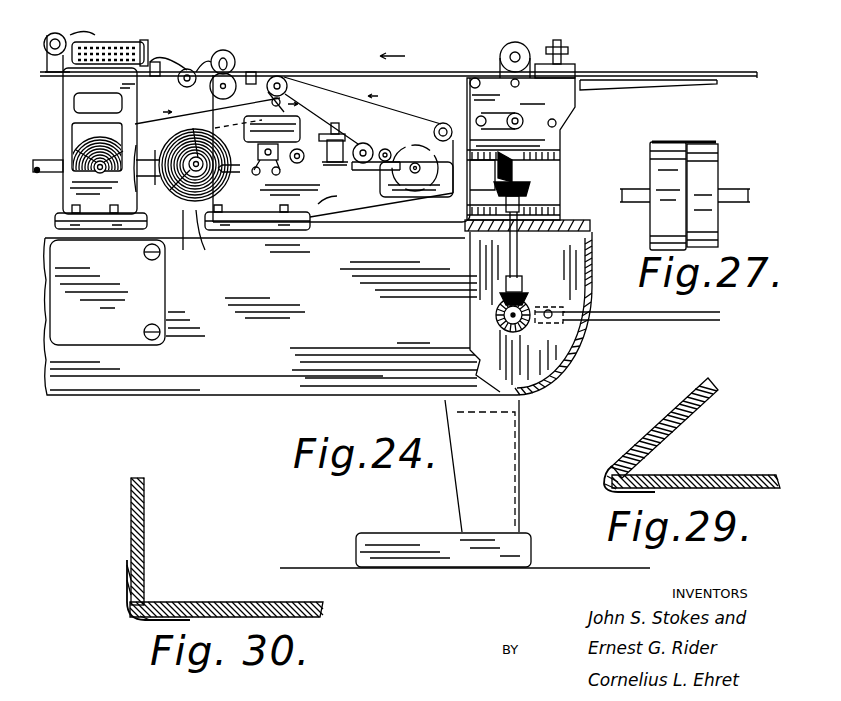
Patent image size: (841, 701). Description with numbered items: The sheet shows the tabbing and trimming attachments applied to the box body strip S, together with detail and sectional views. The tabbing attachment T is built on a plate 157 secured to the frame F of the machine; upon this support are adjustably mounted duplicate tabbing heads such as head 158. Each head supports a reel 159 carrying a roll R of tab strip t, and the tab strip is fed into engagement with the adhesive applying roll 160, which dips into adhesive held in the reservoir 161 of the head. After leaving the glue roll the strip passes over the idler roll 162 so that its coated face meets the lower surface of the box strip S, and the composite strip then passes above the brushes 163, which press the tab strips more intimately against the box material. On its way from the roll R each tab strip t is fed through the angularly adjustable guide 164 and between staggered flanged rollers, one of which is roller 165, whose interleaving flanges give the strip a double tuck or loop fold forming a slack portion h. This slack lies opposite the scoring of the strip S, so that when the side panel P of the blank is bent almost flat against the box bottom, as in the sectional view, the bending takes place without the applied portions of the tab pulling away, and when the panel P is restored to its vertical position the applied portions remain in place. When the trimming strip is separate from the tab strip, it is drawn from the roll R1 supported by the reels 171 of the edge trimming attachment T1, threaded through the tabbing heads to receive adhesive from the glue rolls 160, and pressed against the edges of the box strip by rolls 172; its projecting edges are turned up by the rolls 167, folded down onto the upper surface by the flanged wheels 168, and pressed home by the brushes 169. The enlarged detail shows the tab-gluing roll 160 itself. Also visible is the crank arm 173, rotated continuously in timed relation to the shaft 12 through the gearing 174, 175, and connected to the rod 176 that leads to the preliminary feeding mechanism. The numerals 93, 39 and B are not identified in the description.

In FIG. 24, the box strip S is at (420, 74).
In FIG. 24, the edge trimming attachment T1 is at (70, 102).
In FIG. 24, the roll of trimming strip R1 is at (95, 146).
In FIG. 24, the brushes 169 is at (115, 42).
In FIG. 24, the flanged wheels 168 is at (155, 68).
In FIG. 24, the rolls 167 is at (203, 72).
In FIG. 24, the rolls 172 is at (232, 70).
In FIG. 24, the brushes 163 is at (270, 76).
In FIG. 24, the idler roll 162 is at (287, 91).
In FIG. 24, the angularly adjustable guide 164 is at (245, 130).
In FIG. 24, the guide 93 is at (231, 173).
In FIG. 24, the tab strip t is at (418, 103).
In FIG. 27, the tab strip t is at (679, 131).
In FIG. 24, the roller 165 is at (341, 137).
In FIG. 24, the tabbing attachment T is at (373, 171).
In FIG. 24, the adhesive applying roll 160 is at (413, 157).
In FIG. 27, the adhesive applying roll 160 is at (718, 217).
In FIG. 24, the reservoir 161 is at (410, 183).
In FIG. 24, the tabbing head 158 is at (337, 194).
In FIG. 24, the roll of tab strip R is at (203, 215).
In FIG. 24, the reels 171 is at (168, 175).
In FIG. 24, the reel 159 is at (188, 238).
In FIG. 24, the plate 157 is at (300, 230).
In FIG. 24, the post 39 is at (493, 118).
In FIG. 24, the shaft 12 is at (510, 166).
In FIG. 24, the gearing 174 is at (526, 186).
In FIG. 24, the frame F is at (580, 290).
In FIG. 24, the gearing 175 is at (532, 303).
In FIG. 24, the crank arm 173 is at (558, 322).
In FIG. 24, the rod 176 is at (676, 320).
In FIG. 29, the bar B is at (696, 481).
In FIG. 30, the bar B is at (196, 608).
In FIG. 29, the side panel P is at (710, 394).
In FIG. 30, the side panel P is at (145, 519).
In FIG. 29, the slack portion h is at (607, 486).
In FIG. 30, the slack portion h is at (128, 612).